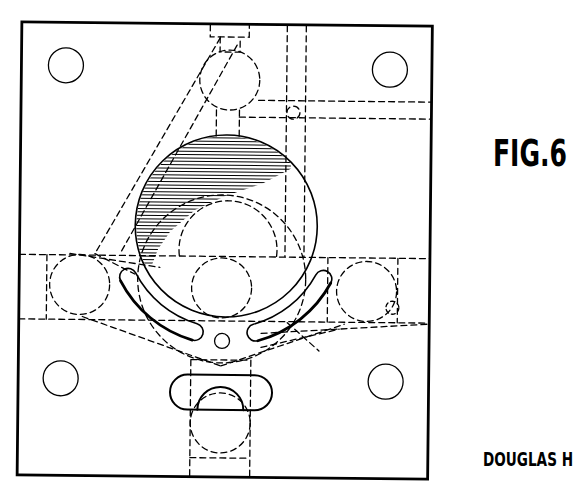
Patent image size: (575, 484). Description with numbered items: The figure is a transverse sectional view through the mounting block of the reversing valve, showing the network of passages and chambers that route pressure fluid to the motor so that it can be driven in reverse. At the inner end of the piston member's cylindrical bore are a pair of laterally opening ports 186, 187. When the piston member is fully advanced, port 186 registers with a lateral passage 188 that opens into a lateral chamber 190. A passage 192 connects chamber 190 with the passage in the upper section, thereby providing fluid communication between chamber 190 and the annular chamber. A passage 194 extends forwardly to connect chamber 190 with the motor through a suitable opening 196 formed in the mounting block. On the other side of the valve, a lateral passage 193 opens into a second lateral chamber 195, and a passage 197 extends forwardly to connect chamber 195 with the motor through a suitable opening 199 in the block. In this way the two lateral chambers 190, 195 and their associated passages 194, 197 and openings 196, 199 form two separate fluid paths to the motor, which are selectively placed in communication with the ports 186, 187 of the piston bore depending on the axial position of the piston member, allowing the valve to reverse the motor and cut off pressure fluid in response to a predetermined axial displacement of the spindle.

The laterally opening port 186 is at (196, 247).
The laterally opening port 187 is at (272, 248).
The lateral passage 188 is at (112, 243).
The lateral chamber 190 is at (60, 256).
The passage 192 is at (158, 150).
The lateral passage 193 is at (312, 261).
The passage 194 is at (103, 326).
The lateral chamber 195 is at (400, 307).
The opening 196 is at (153, 328).
The passage 197 is at (338, 326).
The opening 199 is at (270, 338).